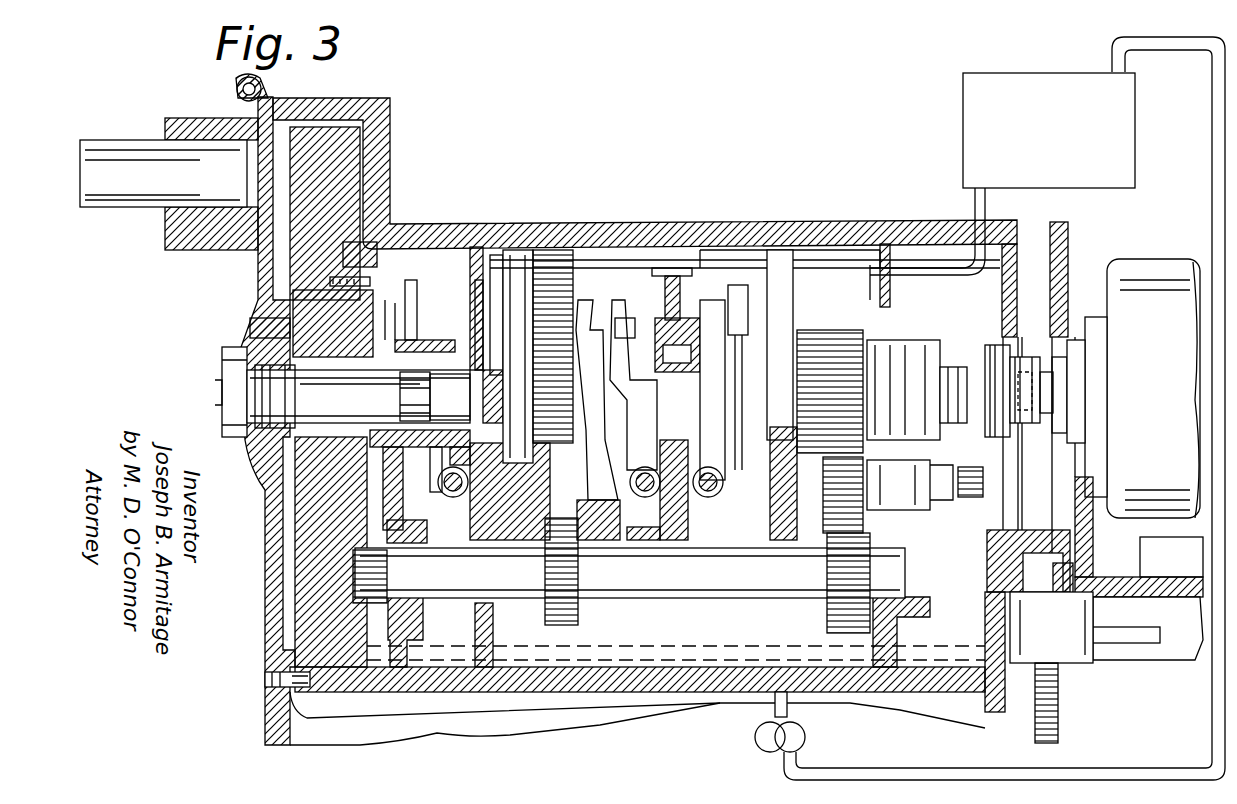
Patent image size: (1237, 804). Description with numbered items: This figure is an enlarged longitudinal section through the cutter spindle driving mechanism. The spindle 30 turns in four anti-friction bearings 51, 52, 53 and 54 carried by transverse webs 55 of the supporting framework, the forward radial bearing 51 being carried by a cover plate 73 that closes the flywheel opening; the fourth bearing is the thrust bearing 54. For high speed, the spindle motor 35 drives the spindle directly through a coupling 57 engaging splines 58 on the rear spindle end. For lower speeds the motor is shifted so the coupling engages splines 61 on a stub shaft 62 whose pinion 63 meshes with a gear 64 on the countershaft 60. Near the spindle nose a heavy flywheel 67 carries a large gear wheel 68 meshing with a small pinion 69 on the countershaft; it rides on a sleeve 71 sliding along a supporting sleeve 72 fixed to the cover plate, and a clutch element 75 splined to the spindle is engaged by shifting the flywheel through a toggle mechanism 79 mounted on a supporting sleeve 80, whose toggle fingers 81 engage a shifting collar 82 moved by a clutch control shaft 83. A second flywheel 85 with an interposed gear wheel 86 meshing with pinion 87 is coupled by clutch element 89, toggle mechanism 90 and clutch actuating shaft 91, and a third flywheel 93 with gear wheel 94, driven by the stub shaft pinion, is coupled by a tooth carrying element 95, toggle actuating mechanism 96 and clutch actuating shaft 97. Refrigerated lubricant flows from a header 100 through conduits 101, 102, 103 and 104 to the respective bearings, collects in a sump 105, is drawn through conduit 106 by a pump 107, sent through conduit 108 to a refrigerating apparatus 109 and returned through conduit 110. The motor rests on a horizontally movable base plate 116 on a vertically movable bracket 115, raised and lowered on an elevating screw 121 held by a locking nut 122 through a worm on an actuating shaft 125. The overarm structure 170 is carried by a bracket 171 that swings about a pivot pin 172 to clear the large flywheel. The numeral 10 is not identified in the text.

The bearing retainer 10 is at (313, 352).
The spindle 30 is at (230, 346).
The spindle motor 35 is at (1140, 275).
The first spindle bearing 51 is at (268, 312).
The second spindle bearing 52 is at (490, 383).
The third spindle bearing 53 is at (677, 345).
The fourth spindle bearing 54 is at (868, 340).
The transverse webs 55 is at (475, 302).
The coupling 57 is at (995, 345).
The splines 58 is at (960, 367).
The countershaft 60 is at (603, 595).
The splines 61 is at (985, 457).
The stub shaft 62 is at (913, 487).
The pinion 63 is at (831, 479).
The gear 64 is at (828, 625).
The flywheel 67 is at (335, 130).
The gear wheel 68 is at (378, 262).
The pinion 69 is at (350, 578).
The sleeve 71 is at (340, 418).
The supporting sleeve 72 is at (298, 396).
The cover plate 73 is at (268, 540).
The clutch element 75 is at (380, 470).
The clutch actuating toggle mechanism 79 is at (427, 283).
The supporting sleeve 80 is at (434, 396).
The toggle fingers 81 is at (437, 492).
The shifting collar 82 is at (450, 397).
The clutch control shaft 83 is at (455, 492).
The second flywheel 85 is at (585, 257).
The gear wheel 86 is at (535, 342).
The pinion 87 is at (545, 575).
The clutch element 89 is at (586, 430).
The clutch actuating toggle mechanism 90 is at (623, 322).
The clutch actuating shaft 91 is at (645, 495).
The third flywheel 93 is at (770, 262).
The gear wheel 94 is at (833, 330).
The tooth carrying element 95 is at (788, 440).
The toggle actuating mechanism 96 is at (745, 298).
The clutch actuating shaft 97 is at (712, 495).
The header 100 is at (940, 268).
The conduit 101 is at (383, 150).
The conduit 102 is at (483, 310).
The conduit 103 is at (665, 288).
The conduit 104 is at (890, 300).
The sump 105 is at (728, 645).
The conduit 106 is at (770, 712).
The pump 107 is at (806, 737).
The conduit 108 is at (860, 750).
The refrigerating apparatus 109 is at (1128, 115).
The conduit 110 is at (970, 203).
The bracket 115 is at (1177, 607).
The base plate 116 is at (1153, 548).
The elevating screw 121 is at (1062, 697).
The locking nut 122 is at (1033, 553).
The actuating shaft 125 is at (1153, 643).
The overarm structure 170 is at (130, 152).
The bracket 171 is at (182, 240).
The pivot pin 172 is at (236, 88).